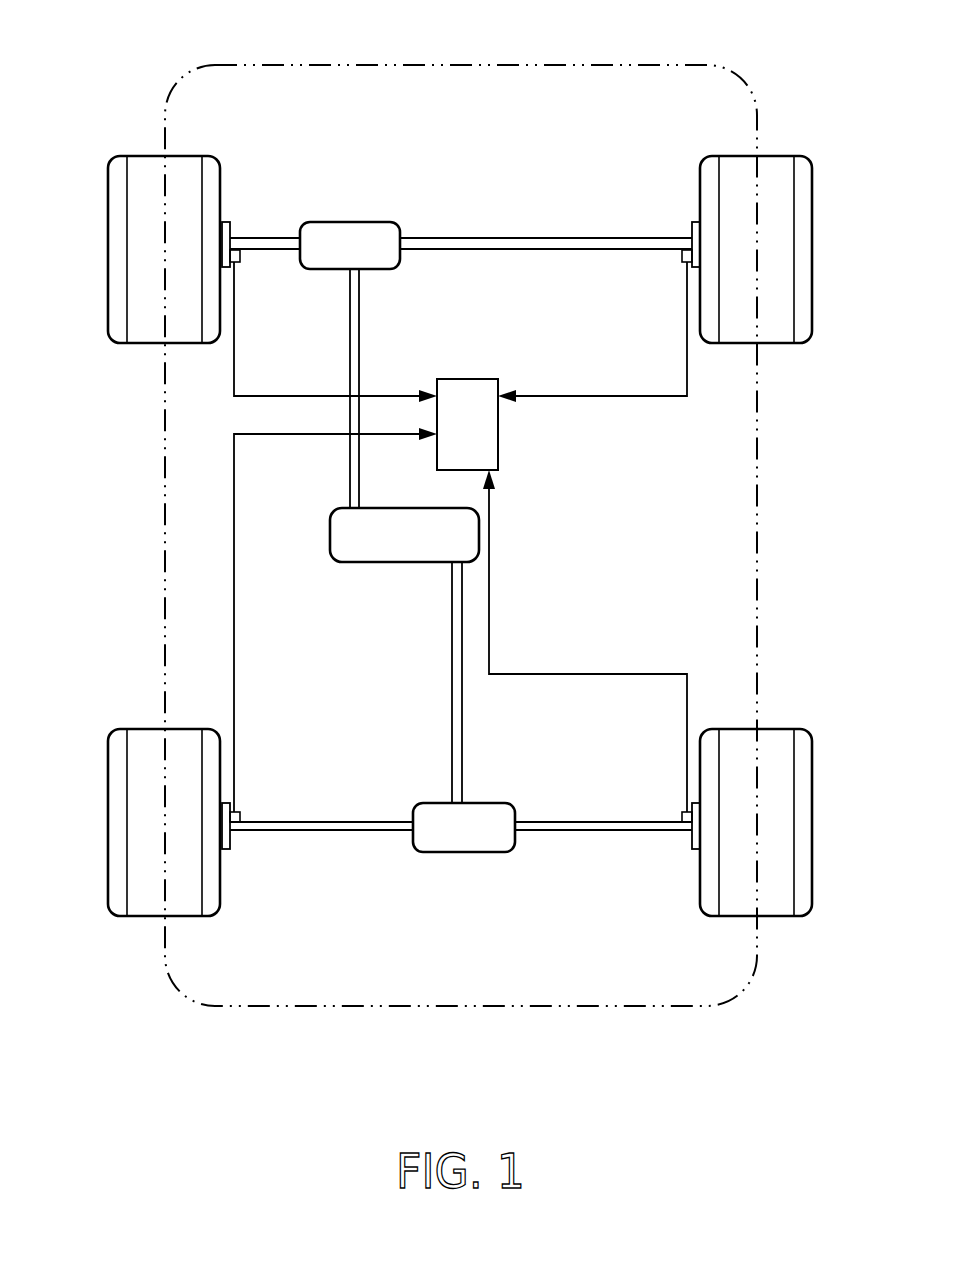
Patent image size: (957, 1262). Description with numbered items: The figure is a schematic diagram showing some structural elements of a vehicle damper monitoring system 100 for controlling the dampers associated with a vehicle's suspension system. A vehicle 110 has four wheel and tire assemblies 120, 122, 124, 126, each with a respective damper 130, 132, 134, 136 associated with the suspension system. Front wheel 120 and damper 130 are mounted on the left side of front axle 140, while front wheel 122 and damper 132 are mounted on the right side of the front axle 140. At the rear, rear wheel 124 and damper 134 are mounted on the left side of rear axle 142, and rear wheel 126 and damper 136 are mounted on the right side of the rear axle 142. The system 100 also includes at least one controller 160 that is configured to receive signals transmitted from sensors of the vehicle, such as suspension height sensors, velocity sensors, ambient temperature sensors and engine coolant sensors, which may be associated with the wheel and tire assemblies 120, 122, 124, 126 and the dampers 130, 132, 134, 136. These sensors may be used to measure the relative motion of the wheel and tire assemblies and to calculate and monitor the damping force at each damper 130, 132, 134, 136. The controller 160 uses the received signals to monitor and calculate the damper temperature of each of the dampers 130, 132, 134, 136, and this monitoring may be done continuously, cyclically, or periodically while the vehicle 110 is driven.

The vehicle damper monitoring system 100 is at (54, 1031).
The vehicle 110 is at (441, 46).
The front wheel 120 is at (143, 155).
The front wheel 122 is at (779, 155).
The rear wheel 124 is at (147, 729).
The rear wheel 126 is at (783, 729).
The damper 130 is at (224, 221).
The damper 132 is at (698, 221).
The damper 134 is at (224, 851).
The damper 136 is at (696, 851).
The front axle 140 is at (430, 237).
The rear axle 142 is at (530, 832).
The controller 160 is at (488, 427).